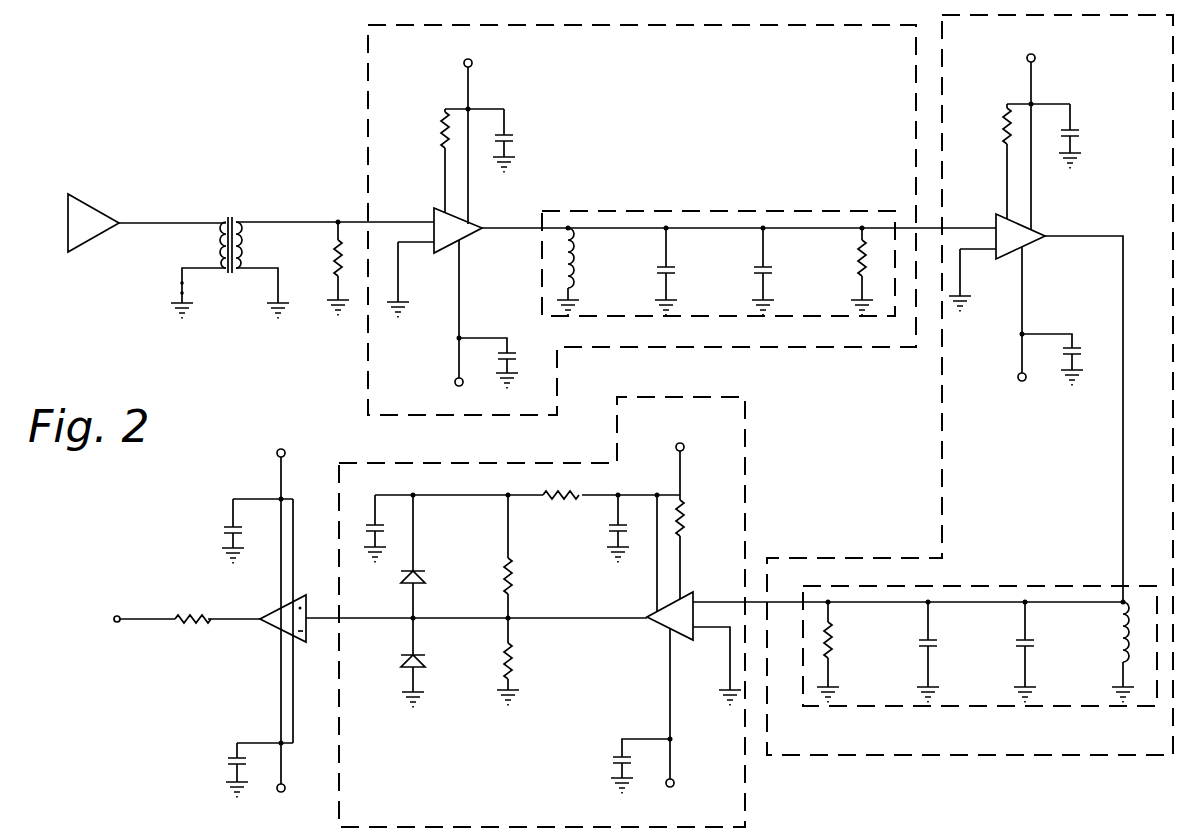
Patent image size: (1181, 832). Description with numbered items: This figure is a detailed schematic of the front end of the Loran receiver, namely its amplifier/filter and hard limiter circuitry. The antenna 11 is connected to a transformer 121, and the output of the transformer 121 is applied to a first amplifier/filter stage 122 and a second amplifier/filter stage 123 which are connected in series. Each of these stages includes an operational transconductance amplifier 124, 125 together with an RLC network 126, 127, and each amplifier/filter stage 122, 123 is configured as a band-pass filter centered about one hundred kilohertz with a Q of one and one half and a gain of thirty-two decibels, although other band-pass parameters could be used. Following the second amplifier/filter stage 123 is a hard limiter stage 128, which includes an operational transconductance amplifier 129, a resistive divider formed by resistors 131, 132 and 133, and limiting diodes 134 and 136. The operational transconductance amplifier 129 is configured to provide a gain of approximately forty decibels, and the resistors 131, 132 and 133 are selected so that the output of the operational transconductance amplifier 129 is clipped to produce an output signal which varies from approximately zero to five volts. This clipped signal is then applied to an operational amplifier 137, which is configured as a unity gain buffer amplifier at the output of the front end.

The antenna 11 is at (82, 206).
The transformer 121 is at (232, 213).
The first amplifier/filter stage 122 is at (750, 99).
The operational transconductance amplifier 124 is at (465, 237).
The RLC network 126 is at (728, 263).
The second amplifier/filter stage 123 is at (1045, 503).
The operational transconductance amplifier 125 is at (1005, 252).
The RLC network 127 is at (990, 640).
The hard limiter stage 128 is at (518, 757).
The operational transconductance amplifier 129 is at (662, 625).
The resistor 131 is at (515, 667).
The resistor 132 is at (512, 571).
The resistor 133 is at (560, 506).
The limiting diode 134 is at (430, 659).
The limiting diode 136 is at (430, 574).
The operational amplifier 137 is at (274, 624).